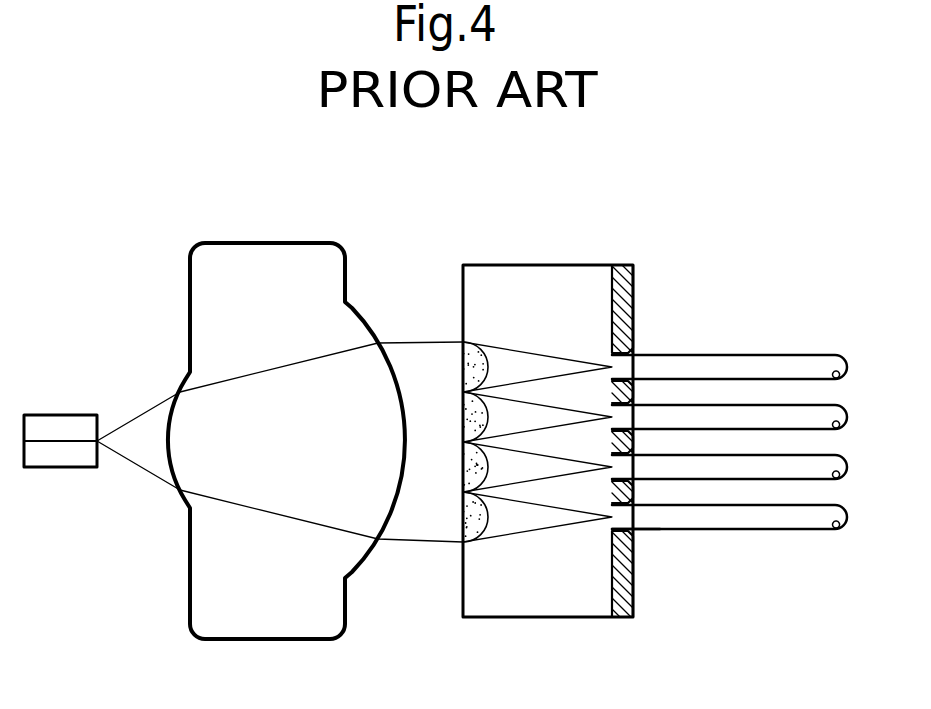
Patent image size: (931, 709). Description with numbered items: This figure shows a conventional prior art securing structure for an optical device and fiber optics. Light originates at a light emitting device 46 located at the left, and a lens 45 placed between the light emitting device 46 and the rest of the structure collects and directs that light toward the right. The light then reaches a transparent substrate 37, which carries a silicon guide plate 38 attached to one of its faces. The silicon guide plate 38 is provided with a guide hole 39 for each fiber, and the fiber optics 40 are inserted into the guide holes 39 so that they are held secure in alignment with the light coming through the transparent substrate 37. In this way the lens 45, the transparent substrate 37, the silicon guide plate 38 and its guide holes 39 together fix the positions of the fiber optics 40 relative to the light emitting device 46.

The transparent substrate 37 is at (537, 617).
The silicon guide plate 38 is at (625, 597).
The guide hole 39 is at (645, 533).
The fiber optics 40 is at (778, 355).
The lens 45 is at (297, 243).
The light emitting device 46 is at (65, 415).